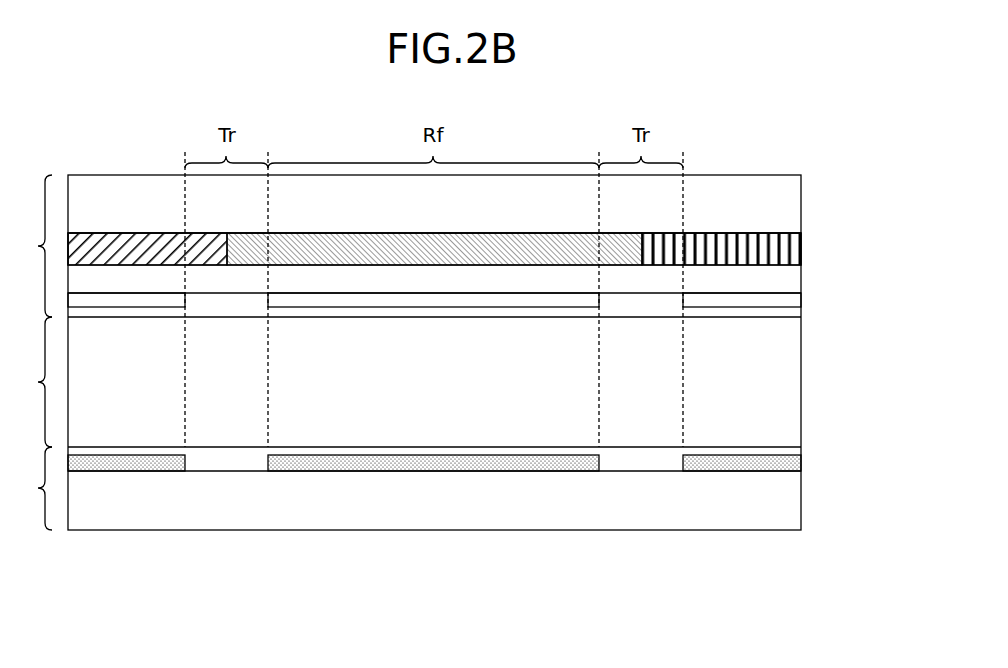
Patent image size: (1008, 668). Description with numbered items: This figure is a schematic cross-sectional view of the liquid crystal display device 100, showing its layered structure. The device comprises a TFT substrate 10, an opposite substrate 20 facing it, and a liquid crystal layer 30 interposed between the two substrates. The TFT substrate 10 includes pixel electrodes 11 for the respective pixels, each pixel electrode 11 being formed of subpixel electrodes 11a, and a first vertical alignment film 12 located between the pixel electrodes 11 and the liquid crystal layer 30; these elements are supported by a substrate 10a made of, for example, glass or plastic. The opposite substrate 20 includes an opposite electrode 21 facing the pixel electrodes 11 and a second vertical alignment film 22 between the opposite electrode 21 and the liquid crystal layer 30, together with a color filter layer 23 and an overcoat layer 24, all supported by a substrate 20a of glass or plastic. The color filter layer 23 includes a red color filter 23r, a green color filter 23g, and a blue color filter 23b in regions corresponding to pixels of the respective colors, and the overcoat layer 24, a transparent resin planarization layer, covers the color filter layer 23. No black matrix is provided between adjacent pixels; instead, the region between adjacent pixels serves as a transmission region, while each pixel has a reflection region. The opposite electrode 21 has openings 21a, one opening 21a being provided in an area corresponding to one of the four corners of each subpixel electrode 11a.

The liquid crystal display device 100 is at (871, 157).
The TFT substrate 10 is at (29, 488).
The substrate 10a is at (787, 500).
The pixel electrode 11 is at (434, 488).
The subpixel electrode 11a is at (124, 465).
The first vertical alignment film 12 is at (787, 451).
The opposite substrate 20 is at (29, 246).
The substrate 20a is at (787, 208).
The opposite electrode 21 is at (787, 304).
The opening 21a is at (227, 304).
The second vertical alignment film 22 is at (787, 316).
The color filter layer 23 is at (457, 231).
The red color filter 23r is at (150, 233).
The green color filter 23g is at (434, 236).
The blue color filter 23b is at (718, 242).
The overcoat layer 24 is at (787, 283).
The liquid crystal layer 30 is at (29, 382).